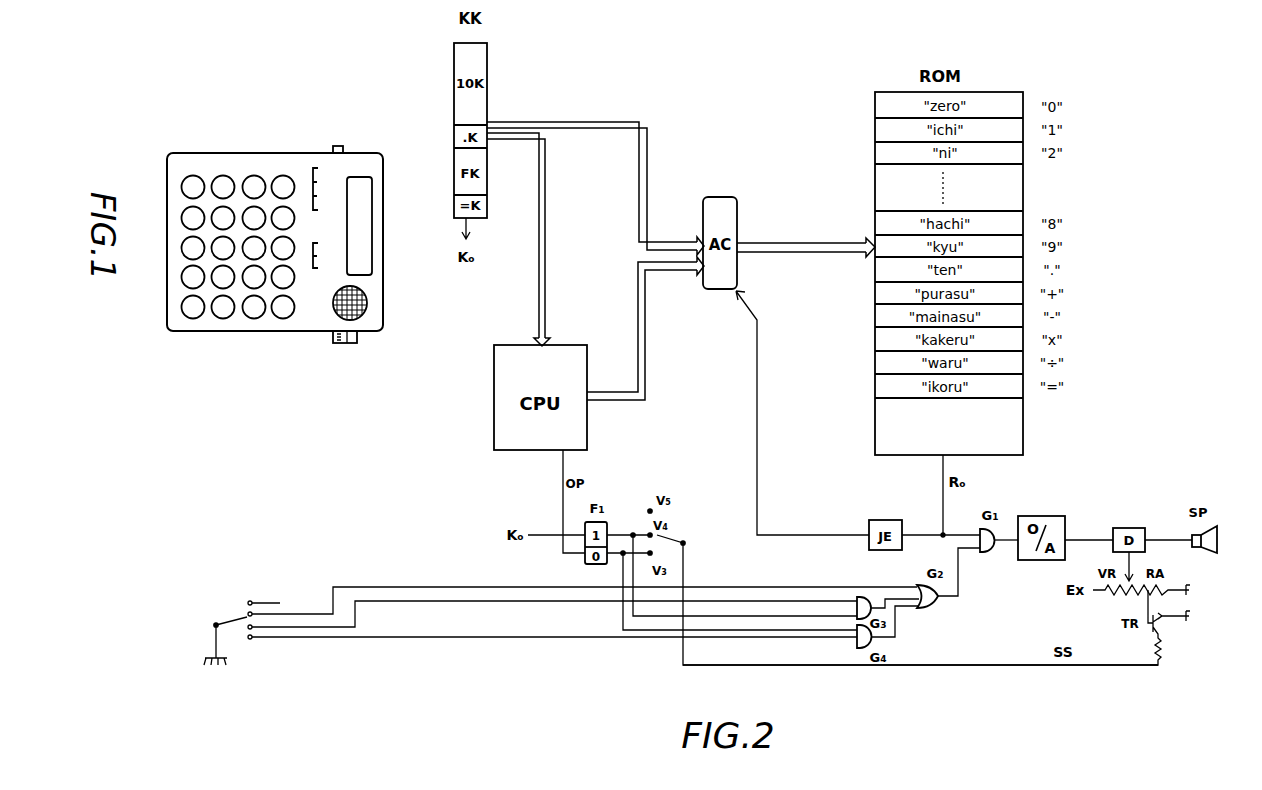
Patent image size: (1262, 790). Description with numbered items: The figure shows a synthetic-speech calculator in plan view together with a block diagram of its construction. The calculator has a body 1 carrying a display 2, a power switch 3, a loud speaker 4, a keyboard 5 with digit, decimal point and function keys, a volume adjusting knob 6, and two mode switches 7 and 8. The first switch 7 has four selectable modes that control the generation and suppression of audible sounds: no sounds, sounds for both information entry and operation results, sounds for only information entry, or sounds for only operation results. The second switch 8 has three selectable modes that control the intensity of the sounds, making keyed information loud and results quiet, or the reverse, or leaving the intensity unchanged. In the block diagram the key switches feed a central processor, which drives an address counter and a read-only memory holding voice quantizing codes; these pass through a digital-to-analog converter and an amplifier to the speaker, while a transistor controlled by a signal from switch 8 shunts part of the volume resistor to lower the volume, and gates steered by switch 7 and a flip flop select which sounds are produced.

In FIG. 1, the body 1 is at (383, 170).
In FIG. 1, the display 2 is at (363, 238).
In FIG. 1, the power switch 3 is at (340, 147).
In FIG. 1, the loud speaker 4 is at (370, 307).
In FIG. 1, the keyboard 5 is at (252, 182).
In FIG. 1, the volume adjusting knob 6 is at (353, 347).
In FIG. 1, the first mode switch 7 is at (308, 178).
In FIG. 2, the first mode switch 7 is at (227, 615).
In FIG. 1, the second mode switch 8 is at (310, 270).
In FIG. 2, the second mode switch 8 is at (683, 532).